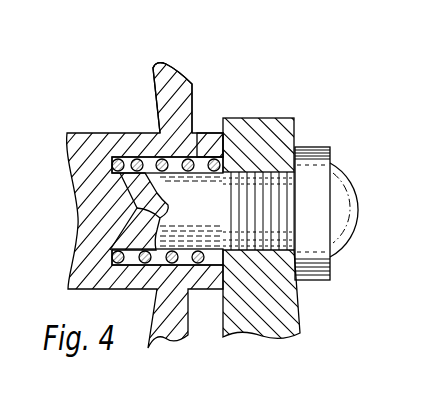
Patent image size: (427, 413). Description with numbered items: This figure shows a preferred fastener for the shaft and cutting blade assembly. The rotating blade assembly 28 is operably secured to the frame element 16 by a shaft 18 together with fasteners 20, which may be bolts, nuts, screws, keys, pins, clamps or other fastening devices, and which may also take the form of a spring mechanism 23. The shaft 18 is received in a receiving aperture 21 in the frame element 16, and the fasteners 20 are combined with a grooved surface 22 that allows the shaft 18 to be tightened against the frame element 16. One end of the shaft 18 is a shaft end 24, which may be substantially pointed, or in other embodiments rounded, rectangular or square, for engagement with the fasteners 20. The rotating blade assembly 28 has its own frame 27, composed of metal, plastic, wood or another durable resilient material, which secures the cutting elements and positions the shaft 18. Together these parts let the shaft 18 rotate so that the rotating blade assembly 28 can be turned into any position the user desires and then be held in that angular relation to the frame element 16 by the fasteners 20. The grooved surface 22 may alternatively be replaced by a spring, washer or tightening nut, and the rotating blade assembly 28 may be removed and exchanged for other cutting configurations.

The frame element 16 is at (285, 259).
The shaft 18 is at (93, 131).
The fasteners 20 is at (330, 151).
The receiving aperture 21 is at (232, 146).
The grooved surface 22 is at (267, 231).
The spring mechanism 23 is at (204, 133).
The shaft end 24 is at (164, 215).
The frame 27 is at (187, 86).
The rotating blade assembly 28 is at (151, 71).